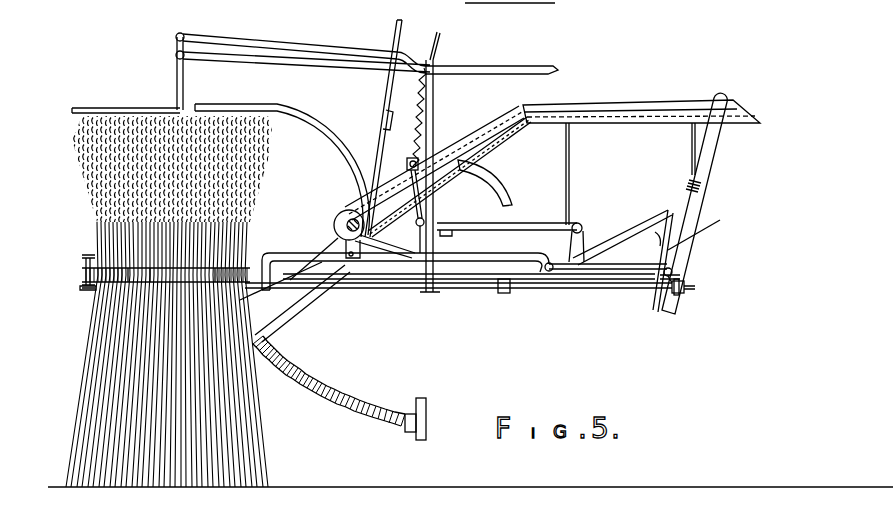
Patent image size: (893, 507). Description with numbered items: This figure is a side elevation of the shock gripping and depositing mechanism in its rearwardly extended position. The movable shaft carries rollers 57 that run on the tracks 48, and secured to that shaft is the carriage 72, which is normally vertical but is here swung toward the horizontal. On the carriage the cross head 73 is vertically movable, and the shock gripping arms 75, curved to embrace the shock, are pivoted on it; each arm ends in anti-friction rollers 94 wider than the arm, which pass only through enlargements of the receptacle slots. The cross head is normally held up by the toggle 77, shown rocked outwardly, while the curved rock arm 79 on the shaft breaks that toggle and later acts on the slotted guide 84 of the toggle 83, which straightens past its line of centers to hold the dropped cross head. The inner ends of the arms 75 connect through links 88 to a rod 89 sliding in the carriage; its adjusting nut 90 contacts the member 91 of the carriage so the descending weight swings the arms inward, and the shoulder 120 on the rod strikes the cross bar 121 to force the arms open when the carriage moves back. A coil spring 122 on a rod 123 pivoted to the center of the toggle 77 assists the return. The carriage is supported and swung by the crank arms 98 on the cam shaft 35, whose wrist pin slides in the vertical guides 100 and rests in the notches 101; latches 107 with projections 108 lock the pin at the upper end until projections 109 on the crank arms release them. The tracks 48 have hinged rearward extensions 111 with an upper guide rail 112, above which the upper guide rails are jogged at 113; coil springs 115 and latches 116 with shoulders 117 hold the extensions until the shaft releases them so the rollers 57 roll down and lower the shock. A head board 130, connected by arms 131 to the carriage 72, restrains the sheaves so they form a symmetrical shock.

The cam shaft 35 is at (718, 100).
The tracks 48 is at (583, 105).
The rollers 57 is at (340, 221).
The carriage 72 is at (522, 262).
The cross head 73 is at (283, 250).
The shock gripping arms 75 is at (97, 287).
The toggle 77 is at (387, 170).
The curved rock arm 79 is at (503, 194).
The toggle 83 is at (445, 225).
The slotted guide 84 is at (427, 208).
The links 88 is at (394, 288).
The rod 89 is at (610, 294).
The adjusting nut 90 is at (686, 297).
The member 91 is at (680, 290).
The anti-friction rollers 94 is at (83, 256).
The crank arms 98 is at (692, 240).
The vertical guides 100 is at (638, 272).
The notches 101 is at (551, 263).
The latches 107 is at (654, 228).
The projections 108 is at (673, 270).
The projections 109 is at (680, 278).
The rearward extensions 111 is at (493, 122).
The upper guide rail 112 is at (352, 203).
The jog 113 is at (398, 52).
The coil springs 115 is at (342, 390).
The latches 116 is at (385, 80).
The shoulders 117 is at (380, 124).
The shoulder 120 is at (508, 292).
The cross bar 121 is at (540, 272).
The coil spring 122 is at (424, 101).
The rod 123 is at (437, 58).
The head board 130 is at (116, 108).
The arms 131 is at (322, 137).